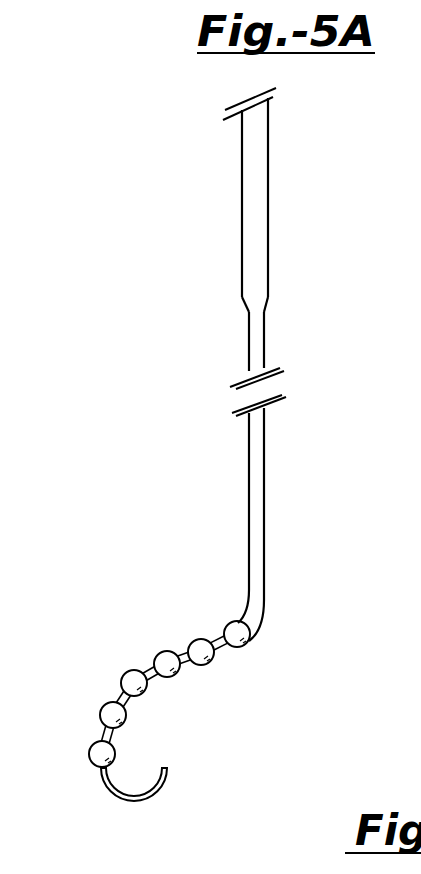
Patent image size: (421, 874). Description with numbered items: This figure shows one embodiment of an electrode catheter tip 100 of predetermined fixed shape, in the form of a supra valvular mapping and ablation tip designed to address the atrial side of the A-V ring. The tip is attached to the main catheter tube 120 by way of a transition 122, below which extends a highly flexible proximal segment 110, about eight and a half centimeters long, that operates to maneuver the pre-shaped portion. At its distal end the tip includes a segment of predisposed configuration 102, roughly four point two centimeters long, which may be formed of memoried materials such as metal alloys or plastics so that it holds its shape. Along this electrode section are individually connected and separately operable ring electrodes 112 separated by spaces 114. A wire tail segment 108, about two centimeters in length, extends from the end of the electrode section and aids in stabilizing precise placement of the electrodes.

The catheter tip 100 is at (280, 179).
The main catheter tube 120 is at (242, 240).
The transition 122 is at (247, 310).
The flexible proximal segment 110 is at (249, 513).
The predisposed configuration segment 102 is at (140, 640).
The ring electrodes 112 is at (78, 740).
The spaces 114 is at (120, 698).
The wire tail segment 108 is at (113, 797).